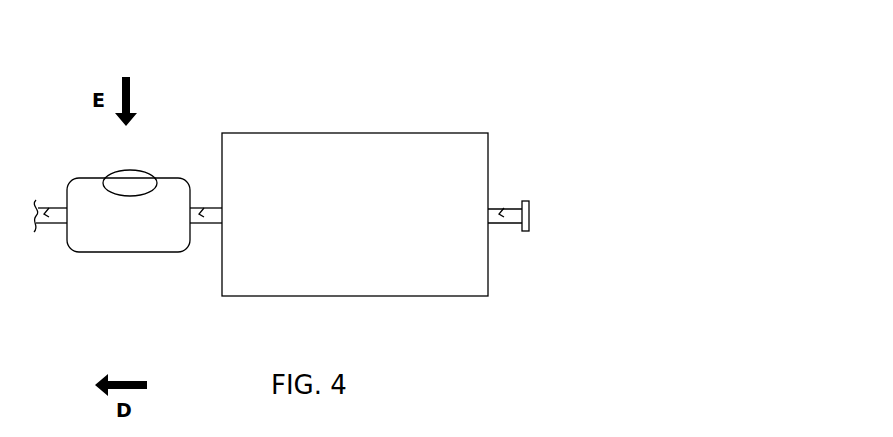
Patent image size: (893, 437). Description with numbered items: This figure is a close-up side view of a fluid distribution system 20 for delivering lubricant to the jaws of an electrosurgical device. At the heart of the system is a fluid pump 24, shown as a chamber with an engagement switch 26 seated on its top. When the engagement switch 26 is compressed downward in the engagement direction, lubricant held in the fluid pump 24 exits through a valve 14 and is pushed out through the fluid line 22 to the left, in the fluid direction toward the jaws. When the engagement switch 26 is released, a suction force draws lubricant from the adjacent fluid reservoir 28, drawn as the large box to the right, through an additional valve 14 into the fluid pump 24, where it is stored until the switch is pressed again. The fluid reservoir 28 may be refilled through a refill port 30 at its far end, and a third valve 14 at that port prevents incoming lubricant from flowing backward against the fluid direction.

The valve 14 is at (46, 217).
The fluid distribution system 20 is at (536, 88).
The fluid line 22 is at (40, 214).
The fluid pump 24 is at (131, 232).
The engagement switch 26 is at (137, 177).
The fluid reservoir 28 is at (338, 152).
The refill port 30 is at (530, 213).